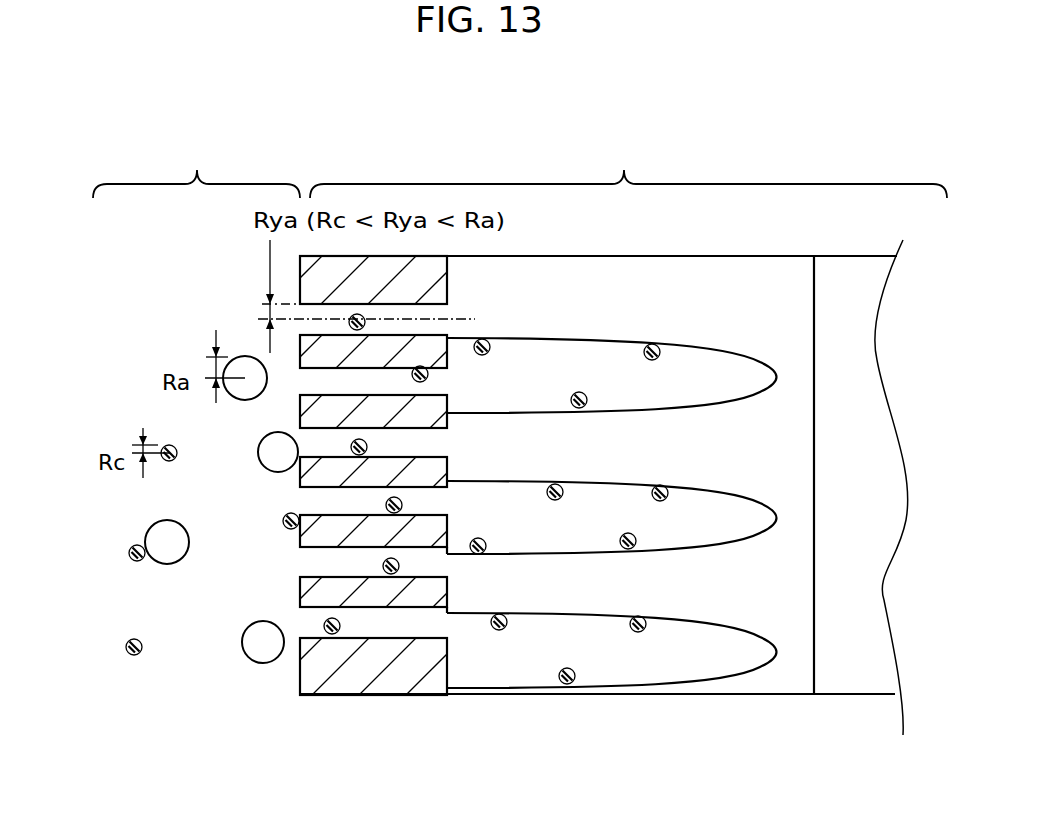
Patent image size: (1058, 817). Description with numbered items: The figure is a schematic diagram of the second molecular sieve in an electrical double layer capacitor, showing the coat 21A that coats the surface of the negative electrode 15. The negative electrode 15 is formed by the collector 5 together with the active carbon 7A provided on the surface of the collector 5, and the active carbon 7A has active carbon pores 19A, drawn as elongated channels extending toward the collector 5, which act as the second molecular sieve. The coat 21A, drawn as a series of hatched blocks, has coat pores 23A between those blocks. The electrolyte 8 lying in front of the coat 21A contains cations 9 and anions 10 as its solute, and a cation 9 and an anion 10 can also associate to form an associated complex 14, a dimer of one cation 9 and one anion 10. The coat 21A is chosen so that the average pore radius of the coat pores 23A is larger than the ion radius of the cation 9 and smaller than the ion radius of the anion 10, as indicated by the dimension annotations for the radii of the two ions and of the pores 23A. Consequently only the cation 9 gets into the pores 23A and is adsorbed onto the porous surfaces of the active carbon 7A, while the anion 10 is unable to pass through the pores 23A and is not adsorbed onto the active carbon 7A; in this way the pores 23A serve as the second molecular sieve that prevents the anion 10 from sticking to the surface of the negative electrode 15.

The electrolyte 8 is at (196, 168).
The negative electrode 15 is at (628, 168).
The active carbon 7A is at (655, 283).
The active carbon pore 19A is at (720, 373).
The collector 5 is at (862, 280).
The coat 21A is at (411, 657).
The coat pore 23A is at (352, 622).
The cation 9 is at (641, 631).
The anion 10 is at (262, 650).
The associated complex 14 is at (158, 573).